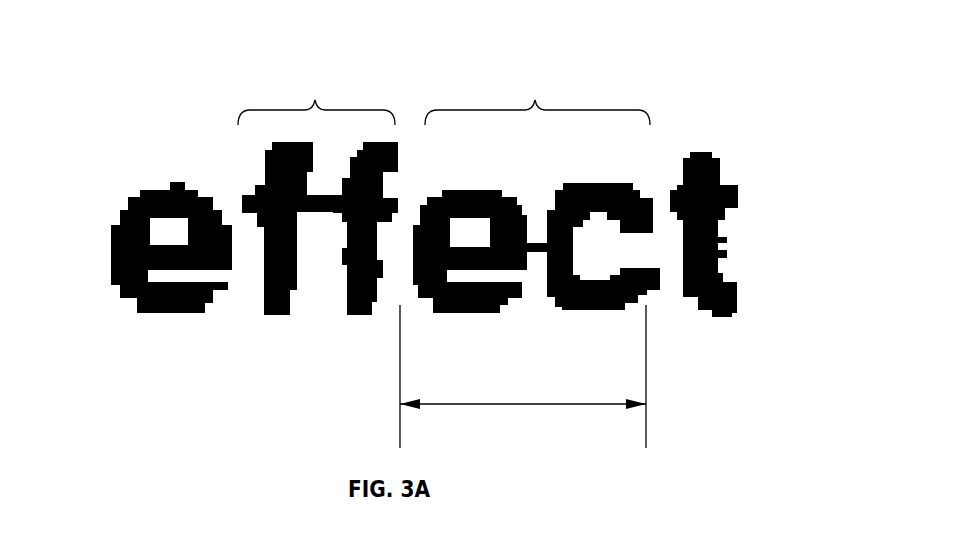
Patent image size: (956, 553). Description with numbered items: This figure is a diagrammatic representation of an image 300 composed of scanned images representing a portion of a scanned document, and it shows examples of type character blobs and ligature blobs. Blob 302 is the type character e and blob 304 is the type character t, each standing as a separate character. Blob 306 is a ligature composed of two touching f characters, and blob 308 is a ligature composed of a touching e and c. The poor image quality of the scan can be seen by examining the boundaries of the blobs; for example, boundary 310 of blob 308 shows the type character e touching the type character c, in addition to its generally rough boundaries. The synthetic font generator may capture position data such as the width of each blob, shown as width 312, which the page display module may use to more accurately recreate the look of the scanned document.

The image 300 is at (732, 62).
The blob 302 is at (127, 213).
The blob 304 is at (727, 225).
The ligature blob 306 is at (315, 100).
The ligature blob 308 is at (535, 100).
The boundary 310 is at (530, 252).
The width 312 is at (562, 430).